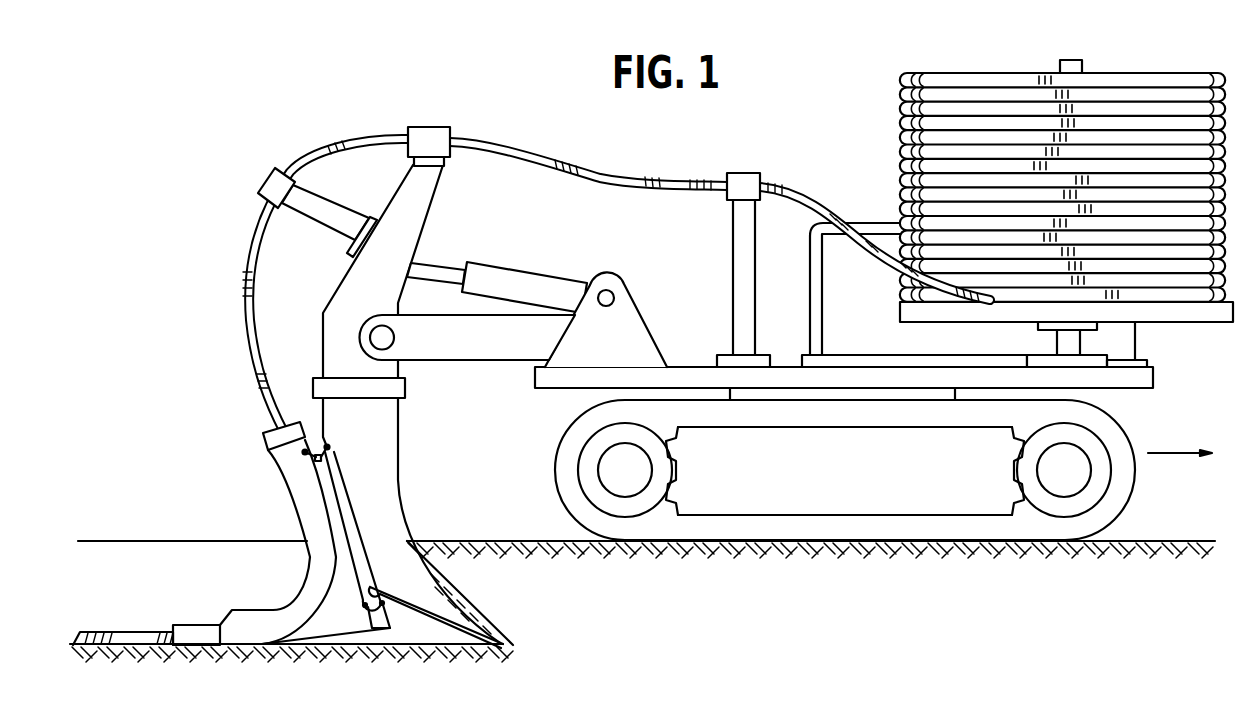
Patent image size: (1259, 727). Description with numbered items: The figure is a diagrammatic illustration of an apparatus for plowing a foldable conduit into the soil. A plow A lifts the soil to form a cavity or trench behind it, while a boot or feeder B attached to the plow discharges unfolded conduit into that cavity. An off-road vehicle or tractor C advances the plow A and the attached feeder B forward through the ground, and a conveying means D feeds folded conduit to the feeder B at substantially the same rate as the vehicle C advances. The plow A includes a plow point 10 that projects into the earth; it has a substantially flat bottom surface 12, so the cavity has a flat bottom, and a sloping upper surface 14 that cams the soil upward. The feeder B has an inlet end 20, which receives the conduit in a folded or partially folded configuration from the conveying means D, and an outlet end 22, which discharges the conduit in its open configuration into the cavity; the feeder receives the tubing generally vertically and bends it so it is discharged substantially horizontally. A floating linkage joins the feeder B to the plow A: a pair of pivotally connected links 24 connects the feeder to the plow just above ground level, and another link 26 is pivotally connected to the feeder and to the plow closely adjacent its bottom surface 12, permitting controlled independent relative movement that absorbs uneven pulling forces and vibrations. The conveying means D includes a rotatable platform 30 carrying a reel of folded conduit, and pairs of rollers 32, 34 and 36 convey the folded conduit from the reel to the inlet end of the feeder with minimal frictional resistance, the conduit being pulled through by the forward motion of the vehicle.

The plow point 10 is at (416, 622).
The bottom surface 12 is at (482, 656).
The sloping upper surface 14 is at (425, 607).
The inlet end 20 is at (253, 453).
The outlet end 22 is at (237, 632).
The pair of pivotally connected links 24 is at (328, 450).
The link 26 is at (372, 628).
The rotatable platform 30 is at (1152, 322).
The pair of rollers 32 is at (737, 175).
The pair of rollers 34 is at (433, 126).
The pair of rollers 36 is at (262, 177).
The plow A is at (488, 606).
The boot or feeder B is at (300, 579).
The off-road vehicle or tractor C is at (812, 494).
The conveying means D is at (408, 116).